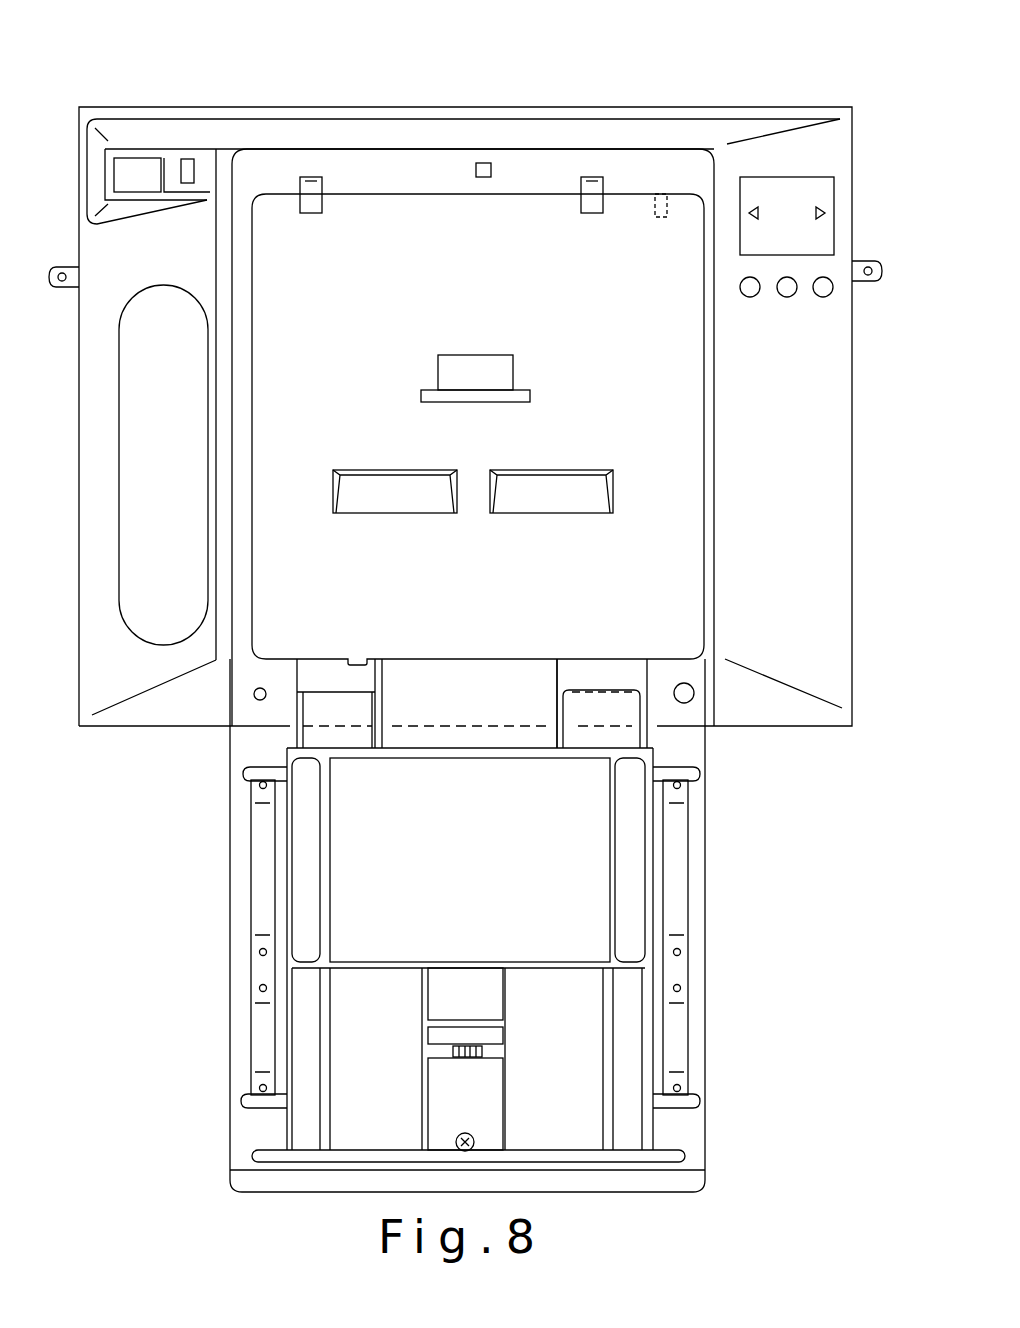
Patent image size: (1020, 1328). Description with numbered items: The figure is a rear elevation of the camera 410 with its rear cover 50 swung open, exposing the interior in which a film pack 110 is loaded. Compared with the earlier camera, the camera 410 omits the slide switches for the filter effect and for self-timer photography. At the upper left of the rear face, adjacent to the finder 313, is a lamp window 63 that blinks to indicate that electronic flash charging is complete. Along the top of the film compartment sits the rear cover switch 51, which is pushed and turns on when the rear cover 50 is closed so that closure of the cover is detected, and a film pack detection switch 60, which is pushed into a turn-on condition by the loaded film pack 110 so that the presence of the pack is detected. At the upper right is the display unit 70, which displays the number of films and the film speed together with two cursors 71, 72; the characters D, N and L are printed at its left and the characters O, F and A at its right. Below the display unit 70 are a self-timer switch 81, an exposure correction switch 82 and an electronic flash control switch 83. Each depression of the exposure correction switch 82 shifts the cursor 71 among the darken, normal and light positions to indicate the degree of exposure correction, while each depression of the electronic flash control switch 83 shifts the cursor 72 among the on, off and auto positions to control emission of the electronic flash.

The camera 410 is at (88, 90).
The finder 313 is at (138, 167).
The lamp window 63 is at (184, 171).
The rear cover switch 51 is at (484, 163).
The film pack detection switch 60 is at (668, 194).
The display unit 70 is at (838, 182).
The cursor 71 is at (753, 205).
The cursor 72 is at (818, 205).
The self-timer switch 81 is at (748, 298).
The exposure correction switch 82 is at (786, 298).
The electronic flash control switch 83 is at (822, 298).
The film pack 110 is at (672, 465).
The rear cover 50 is at (703, 963).